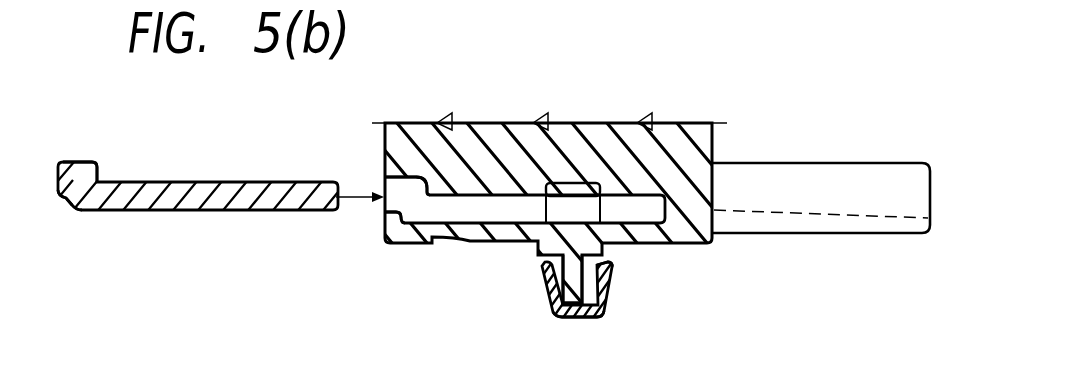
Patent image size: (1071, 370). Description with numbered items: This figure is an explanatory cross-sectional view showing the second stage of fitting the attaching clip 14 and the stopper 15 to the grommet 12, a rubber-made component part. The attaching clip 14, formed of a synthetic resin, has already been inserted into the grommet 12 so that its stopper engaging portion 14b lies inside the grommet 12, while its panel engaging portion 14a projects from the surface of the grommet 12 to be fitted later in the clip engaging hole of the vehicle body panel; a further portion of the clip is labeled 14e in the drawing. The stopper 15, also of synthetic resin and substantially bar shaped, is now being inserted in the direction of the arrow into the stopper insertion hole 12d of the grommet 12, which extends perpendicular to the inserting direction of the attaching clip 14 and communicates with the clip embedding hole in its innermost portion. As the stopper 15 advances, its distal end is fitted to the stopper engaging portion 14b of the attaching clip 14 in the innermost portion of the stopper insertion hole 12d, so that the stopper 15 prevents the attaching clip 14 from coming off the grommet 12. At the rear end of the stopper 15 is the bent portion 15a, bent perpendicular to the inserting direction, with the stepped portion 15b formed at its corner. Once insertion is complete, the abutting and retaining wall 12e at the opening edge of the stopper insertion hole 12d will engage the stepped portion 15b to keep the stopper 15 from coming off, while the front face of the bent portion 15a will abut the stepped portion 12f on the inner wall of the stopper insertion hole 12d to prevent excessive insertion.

The grommet 12 is at (711, 254).
The stopper insertion hole 12d is at (393, 183).
The abutting and retaining wall 12e is at (392, 215).
The stepped portion 12f is at (410, 186).
The attaching clip 14 is at (530, 310).
The panel engaging portion 14a is at (605, 302).
The stopper engaging portion 14b is at (558, 204).
The clip arm tip 14e is at (604, 263).
The stopper 15 is at (192, 181).
The bent portion 15a is at (77, 161).
The stepped portion 15b is at (68, 206).